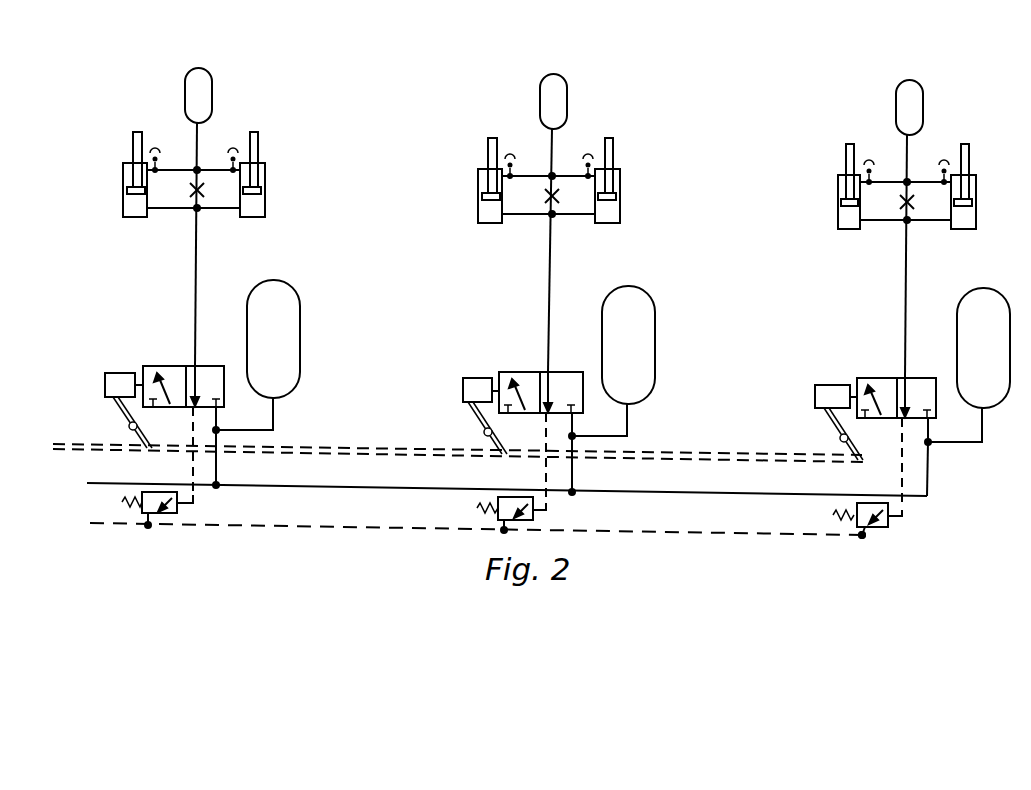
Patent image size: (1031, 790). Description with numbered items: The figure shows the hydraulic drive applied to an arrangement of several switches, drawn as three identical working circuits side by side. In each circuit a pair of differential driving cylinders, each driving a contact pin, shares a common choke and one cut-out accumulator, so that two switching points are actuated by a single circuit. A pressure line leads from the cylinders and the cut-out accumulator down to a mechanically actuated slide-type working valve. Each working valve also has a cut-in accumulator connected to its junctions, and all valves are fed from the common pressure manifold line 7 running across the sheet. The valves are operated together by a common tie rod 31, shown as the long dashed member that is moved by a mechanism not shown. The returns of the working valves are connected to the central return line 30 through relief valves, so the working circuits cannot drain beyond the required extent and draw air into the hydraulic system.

The pressure manifold line 7 is at (378, 488).
The return line 30 is at (383, 530).
The tie rod 31 is at (383, 450).